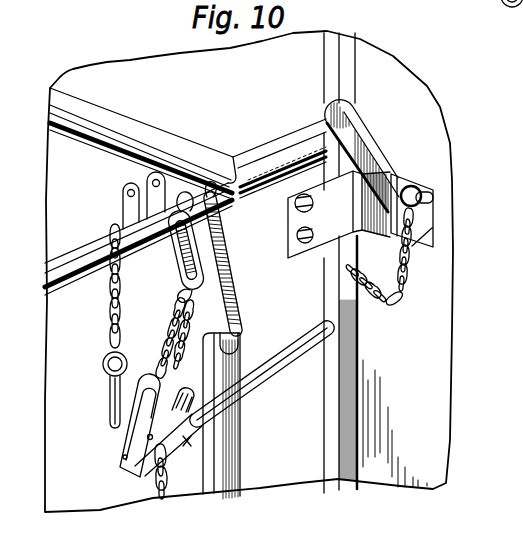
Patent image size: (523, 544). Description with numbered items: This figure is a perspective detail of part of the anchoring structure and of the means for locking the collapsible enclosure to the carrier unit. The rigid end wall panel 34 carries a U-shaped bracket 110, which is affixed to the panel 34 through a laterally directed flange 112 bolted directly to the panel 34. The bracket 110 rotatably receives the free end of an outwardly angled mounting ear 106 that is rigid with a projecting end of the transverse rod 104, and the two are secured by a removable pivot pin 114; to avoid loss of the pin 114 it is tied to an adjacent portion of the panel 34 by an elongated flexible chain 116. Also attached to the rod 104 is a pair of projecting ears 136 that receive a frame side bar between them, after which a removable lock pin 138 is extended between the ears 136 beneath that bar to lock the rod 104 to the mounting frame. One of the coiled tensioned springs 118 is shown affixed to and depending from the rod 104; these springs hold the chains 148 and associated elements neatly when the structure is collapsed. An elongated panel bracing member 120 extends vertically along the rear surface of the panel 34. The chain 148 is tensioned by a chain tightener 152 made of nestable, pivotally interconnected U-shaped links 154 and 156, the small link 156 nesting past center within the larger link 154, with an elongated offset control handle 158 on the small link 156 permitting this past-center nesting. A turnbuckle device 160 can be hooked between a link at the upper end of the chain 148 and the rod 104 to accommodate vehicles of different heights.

The end wall panel 34 is at (275, 463).
The transverse rod 104 is at (251, 160).
The mounting ear 106 is at (360, 140).
The U-shaped bracket 110 is at (418, 179).
The laterally directed flange 112 is at (293, 253).
The removable pivot pin 114 is at (435, 201).
The flexible chain 116 is at (403, 305).
The coiled tensioned spring 118 is at (222, 281).
The panel bracing member 120 is at (231, 448).
The projecting ears 136 is at (124, 207).
The removable lock pin 138 is at (105, 377).
The chain 148 is at (148, 489).
The chain tightener 152 is at (119, 446).
The larger U-shaped link 154 is at (120, 426).
The small U-shaped link 156 is at (187, 449).
The offset control handle 158 is at (299, 348).
The turnbuckle device 160 is at (176, 283).